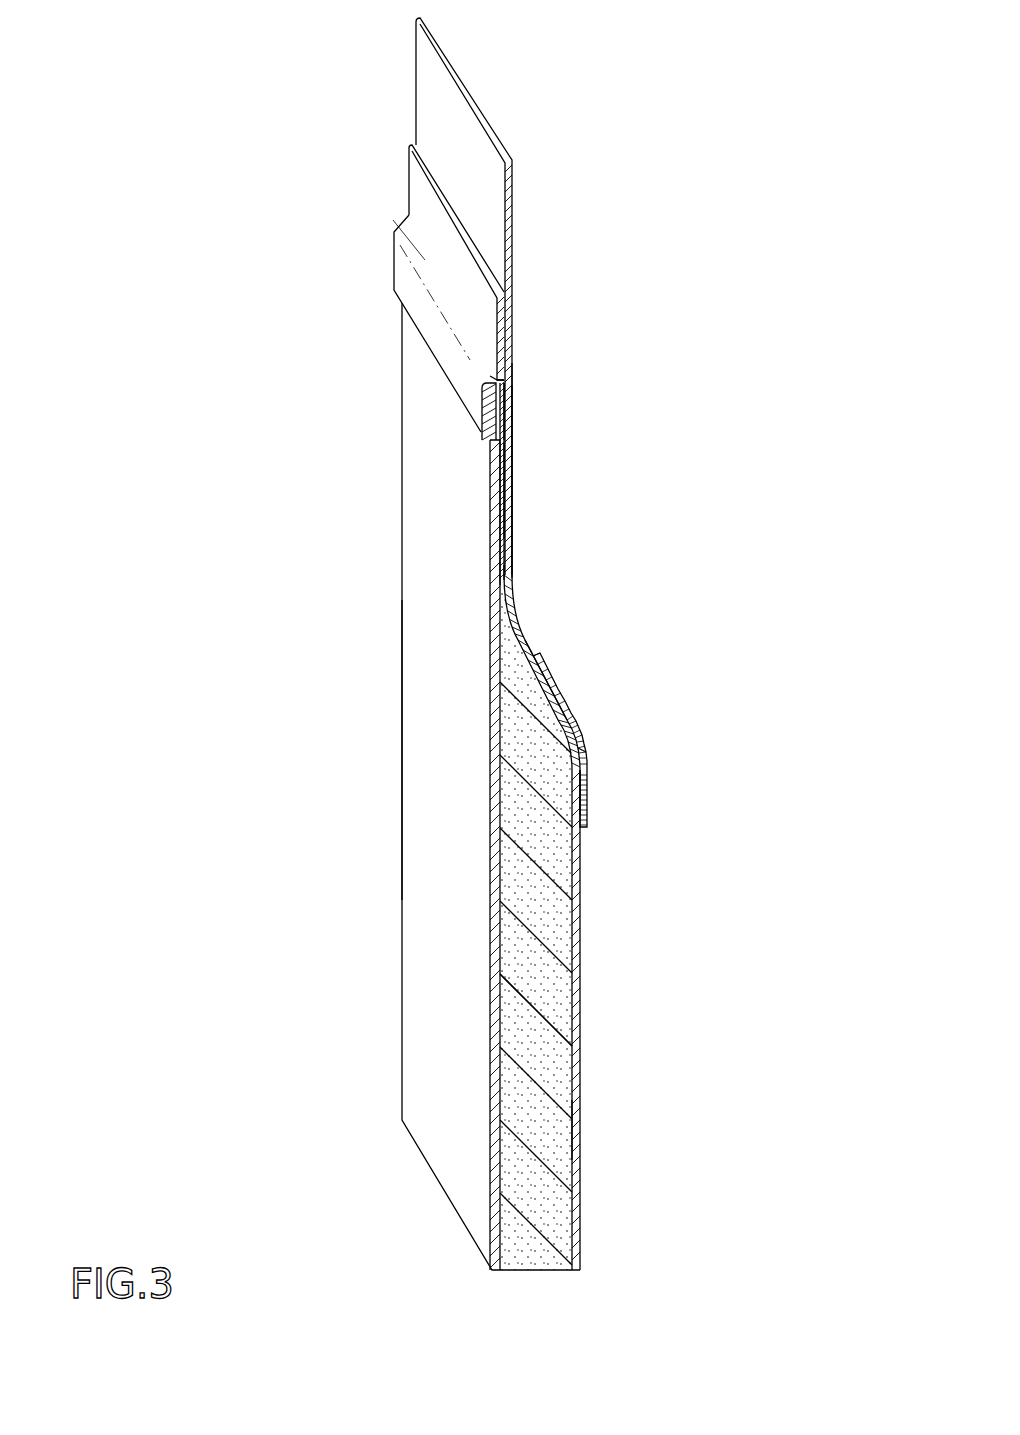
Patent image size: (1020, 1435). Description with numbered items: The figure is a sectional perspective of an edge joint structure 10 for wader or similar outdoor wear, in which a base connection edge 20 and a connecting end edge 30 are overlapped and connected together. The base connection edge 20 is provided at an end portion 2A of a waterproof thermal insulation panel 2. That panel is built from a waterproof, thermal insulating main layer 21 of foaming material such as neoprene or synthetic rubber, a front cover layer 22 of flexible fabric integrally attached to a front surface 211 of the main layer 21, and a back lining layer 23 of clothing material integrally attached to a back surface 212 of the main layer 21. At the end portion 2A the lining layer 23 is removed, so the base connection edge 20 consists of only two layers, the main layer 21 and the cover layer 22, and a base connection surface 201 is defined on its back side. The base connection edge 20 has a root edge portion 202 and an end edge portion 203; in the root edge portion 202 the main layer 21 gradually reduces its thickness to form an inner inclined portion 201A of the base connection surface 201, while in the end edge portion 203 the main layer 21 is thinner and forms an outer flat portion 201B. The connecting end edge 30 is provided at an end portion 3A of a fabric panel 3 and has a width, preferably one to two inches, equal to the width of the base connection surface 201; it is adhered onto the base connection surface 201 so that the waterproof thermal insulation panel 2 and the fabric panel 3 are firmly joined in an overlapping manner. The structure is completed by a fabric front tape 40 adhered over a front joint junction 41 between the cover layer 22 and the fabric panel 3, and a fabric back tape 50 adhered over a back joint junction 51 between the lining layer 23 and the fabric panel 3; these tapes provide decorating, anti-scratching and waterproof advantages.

The waterproof thermal insulation panel 2 is at (620, 1175).
The end portion of the waterproof thermal insulation panel 2A is at (434, 743).
The fabric panel 3 is at (535, 196).
The end portion of the fabric panel 3A is at (544, 400).
The edge joint structure 10 is at (803, 818).
The base connection edge 20 is at (388, 388).
The main layer 21 is at (540, 1052).
The front cover layer 22 is at (498, 918).
The back lining layer 23 is at (580, 900).
The connecting end edge 30 is at (608, 360).
The front tape 40 is at (422, 207).
The front joint junction 41 is at (488, 372).
The back tape 50 is at (588, 790).
The back joint junction 51 is at (596, 747).
The base connection surface 201 is at (528, 668).
The inner inclined portion 201A is at (524, 612).
The outer flat portion 201B is at (519, 385).
The root edge portion 202 is at (486, 735).
The end edge portion 203 is at (486, 538).
The front surface of the main layer 211 is at (514, 994).
The back surface of the main layer 212 is at (568, 1130).